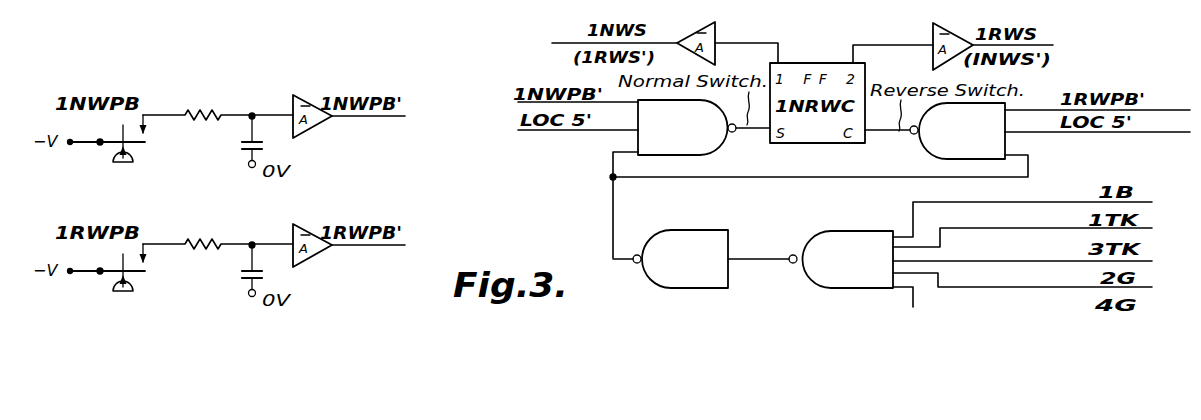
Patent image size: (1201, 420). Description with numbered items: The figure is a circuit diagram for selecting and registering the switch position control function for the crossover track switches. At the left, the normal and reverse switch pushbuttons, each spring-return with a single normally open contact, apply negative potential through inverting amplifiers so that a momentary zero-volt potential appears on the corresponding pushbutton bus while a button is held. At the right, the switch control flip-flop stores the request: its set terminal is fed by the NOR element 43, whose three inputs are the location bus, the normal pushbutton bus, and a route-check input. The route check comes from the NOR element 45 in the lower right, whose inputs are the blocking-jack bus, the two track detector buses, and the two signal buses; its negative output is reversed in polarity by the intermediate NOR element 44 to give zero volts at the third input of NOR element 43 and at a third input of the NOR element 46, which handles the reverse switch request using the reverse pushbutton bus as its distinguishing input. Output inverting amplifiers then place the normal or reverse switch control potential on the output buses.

The NOR element 43 is at (687, 127).
The intermediate NOR element 44 is at (680, 259).
The NOR element 45 is at (841, 259).
The NOR element 46 is at (957, 131).